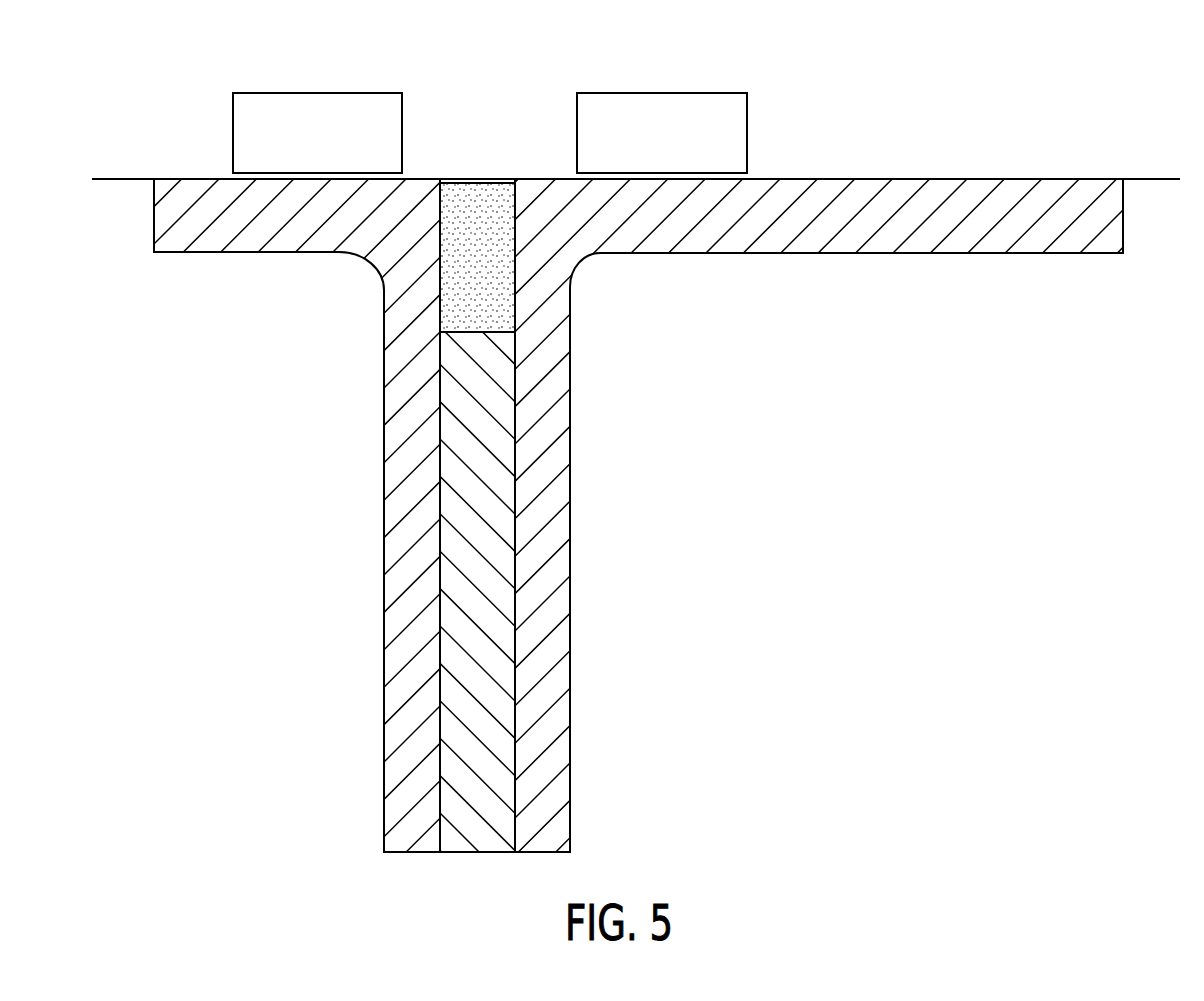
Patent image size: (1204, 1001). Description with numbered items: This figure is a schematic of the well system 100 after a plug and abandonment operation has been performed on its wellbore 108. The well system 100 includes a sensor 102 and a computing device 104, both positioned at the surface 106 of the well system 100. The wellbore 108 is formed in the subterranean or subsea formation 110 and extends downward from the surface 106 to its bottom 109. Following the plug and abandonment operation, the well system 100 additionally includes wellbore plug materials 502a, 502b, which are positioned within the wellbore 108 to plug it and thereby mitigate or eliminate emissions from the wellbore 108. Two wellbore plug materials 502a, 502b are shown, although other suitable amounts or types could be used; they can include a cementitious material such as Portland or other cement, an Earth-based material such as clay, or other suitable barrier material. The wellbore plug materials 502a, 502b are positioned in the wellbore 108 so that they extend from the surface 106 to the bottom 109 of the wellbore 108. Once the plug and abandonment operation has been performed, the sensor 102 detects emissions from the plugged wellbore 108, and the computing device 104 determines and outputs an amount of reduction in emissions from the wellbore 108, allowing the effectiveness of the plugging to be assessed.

The well system 100 is at (602, 468).
The sensor 102 is at (402, 135).
The computing device 104 is at (747, 135).
The surface 106 is at (905, 178).
The wellbore 108 is at (642, 425).
The subterranean or subsea formation 110 is at (342, 323).
The wellbore plug material 502a is at (515, 273).
The wellbore plug material 502b is at (515, 692).
The bottom 109 is at (465, 847).